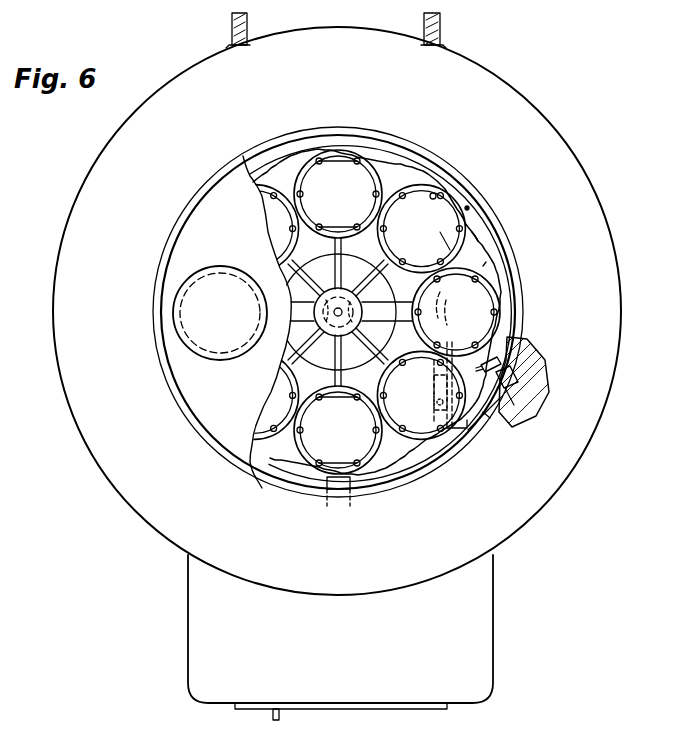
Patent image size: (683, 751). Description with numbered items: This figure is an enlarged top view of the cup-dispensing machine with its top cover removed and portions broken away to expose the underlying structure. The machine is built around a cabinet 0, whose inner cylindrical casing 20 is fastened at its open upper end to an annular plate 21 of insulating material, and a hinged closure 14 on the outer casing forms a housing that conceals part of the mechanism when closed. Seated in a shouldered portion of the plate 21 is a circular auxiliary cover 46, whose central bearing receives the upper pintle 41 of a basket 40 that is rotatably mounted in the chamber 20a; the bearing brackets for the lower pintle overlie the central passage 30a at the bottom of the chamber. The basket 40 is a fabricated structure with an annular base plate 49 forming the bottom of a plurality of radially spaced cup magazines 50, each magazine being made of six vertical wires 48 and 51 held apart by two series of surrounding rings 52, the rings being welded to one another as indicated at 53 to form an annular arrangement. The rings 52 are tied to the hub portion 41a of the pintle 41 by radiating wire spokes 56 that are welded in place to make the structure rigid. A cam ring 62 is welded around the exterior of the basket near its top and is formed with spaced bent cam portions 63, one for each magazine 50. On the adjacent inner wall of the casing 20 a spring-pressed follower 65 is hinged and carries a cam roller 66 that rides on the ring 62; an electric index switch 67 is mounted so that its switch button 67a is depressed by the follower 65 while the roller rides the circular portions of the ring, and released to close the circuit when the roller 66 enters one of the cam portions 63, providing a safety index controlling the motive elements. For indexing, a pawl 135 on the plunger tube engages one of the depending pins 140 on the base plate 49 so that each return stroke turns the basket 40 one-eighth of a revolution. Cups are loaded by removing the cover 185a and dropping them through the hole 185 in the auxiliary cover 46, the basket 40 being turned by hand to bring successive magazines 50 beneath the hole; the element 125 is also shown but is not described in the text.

The cabinet 0 is at (624, 352).
The closure 14 is at (359, 656).
The inner cylindrical casing 20 is at (524, 352).
The chamber 20a is at (279, 473).
The annular plate 21 is at (588, 293).
The central passage 30a is at (354, 279).
The basket 40 is at (469, 209).
The upper pintle 41 is at (328, 330).
The hub portion 41a is at (328, 300).
The auxiliary cover 46 is at (248, 389).
The vertical wires 48 is at (431, 197).
The annular base plate 49 is at (357, 428).
The cup magazines 50 is at (345, 147).
The vertical wires 51 is at (440, 232).
The rings 52 is at (452, 196).
The weld 53 is at (487, 263).
The wire spokes 56 is at (372, 337).
The cam ring 62 is at (294, 157).
The cam portions 63 is at (484, 246).
The spring-pressed follower 65 is at (513, 332).
The cam roller 66 is at (471, 416).
The electric index switch 67 is at (519, 381).
The switch button 67a is at (516, 402).
The bracket 125 is at (325, 492).
The pawl 135 is at (447, 323).
The pins 140 is at (389, 362).
The hole 185 is at (244, 276).
The cover 185a is at (212, 307).